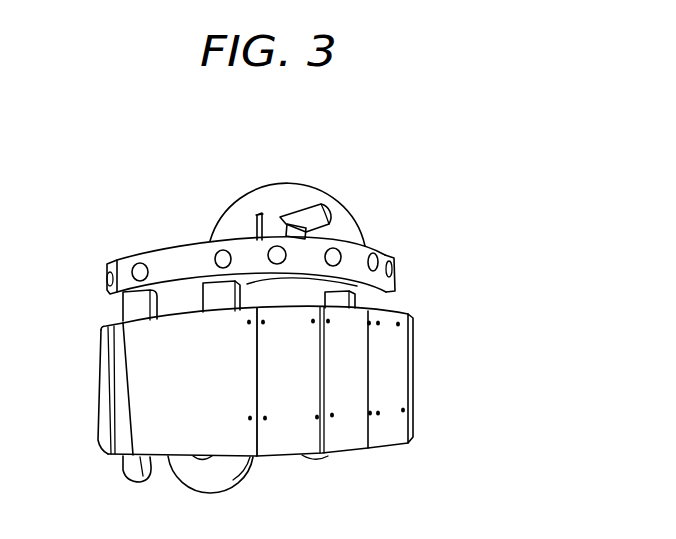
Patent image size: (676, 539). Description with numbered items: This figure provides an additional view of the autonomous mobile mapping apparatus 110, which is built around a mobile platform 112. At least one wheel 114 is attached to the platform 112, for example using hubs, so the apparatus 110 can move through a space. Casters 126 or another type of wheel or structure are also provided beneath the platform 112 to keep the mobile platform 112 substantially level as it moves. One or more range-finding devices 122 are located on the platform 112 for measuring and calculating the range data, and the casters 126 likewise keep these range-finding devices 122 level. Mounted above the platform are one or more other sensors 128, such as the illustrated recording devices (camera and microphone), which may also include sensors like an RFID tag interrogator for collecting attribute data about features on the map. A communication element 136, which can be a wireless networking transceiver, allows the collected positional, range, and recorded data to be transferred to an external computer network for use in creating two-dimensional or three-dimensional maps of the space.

The autonomous mobile mapping apparatus 110 is at (437, 190).
The mobile platform 112 is at (413, 380).
The wheel 114 is at (233, 472).
The range-finding device 122 is at (357, 286).
The casters 126 is at (123, 472).
The other sensors 128 is at (301, 206).
The communication element 136 is at (248, 239).